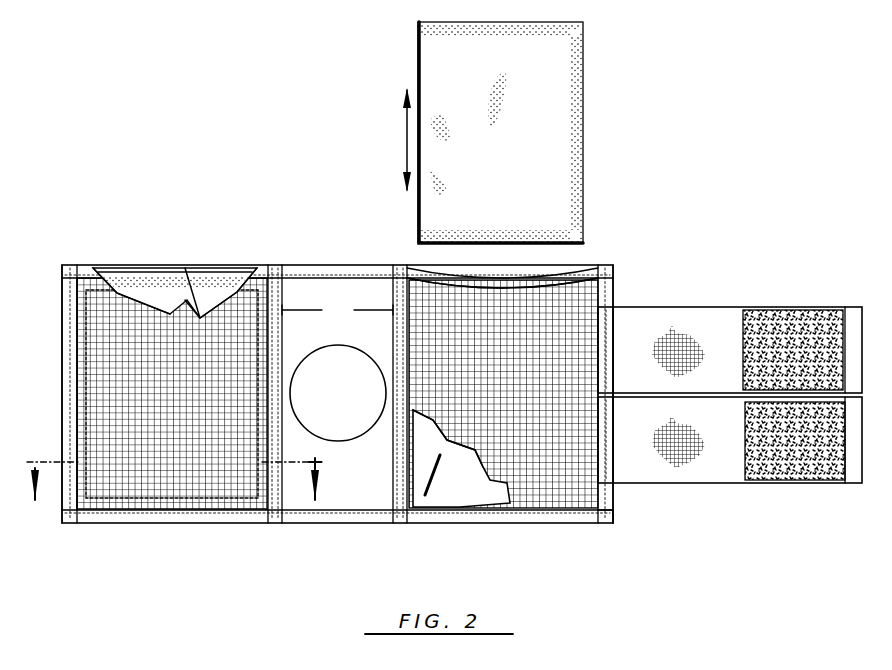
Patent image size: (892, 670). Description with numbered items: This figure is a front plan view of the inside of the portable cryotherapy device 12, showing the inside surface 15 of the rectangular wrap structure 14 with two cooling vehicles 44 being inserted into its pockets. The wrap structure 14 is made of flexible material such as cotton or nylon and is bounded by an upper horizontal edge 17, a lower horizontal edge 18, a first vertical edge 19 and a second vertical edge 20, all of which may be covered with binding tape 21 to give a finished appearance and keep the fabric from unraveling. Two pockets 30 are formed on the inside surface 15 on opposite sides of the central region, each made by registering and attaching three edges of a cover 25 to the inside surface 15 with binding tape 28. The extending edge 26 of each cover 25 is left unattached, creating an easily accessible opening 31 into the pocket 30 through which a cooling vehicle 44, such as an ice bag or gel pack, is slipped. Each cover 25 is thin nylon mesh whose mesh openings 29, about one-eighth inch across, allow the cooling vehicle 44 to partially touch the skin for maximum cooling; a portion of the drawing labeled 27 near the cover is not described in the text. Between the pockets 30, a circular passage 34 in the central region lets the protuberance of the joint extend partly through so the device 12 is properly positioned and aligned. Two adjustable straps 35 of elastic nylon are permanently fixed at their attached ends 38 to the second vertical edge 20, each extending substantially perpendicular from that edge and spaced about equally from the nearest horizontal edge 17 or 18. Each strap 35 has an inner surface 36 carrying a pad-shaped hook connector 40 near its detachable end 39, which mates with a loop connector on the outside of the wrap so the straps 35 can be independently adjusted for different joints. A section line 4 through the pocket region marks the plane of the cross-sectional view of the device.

The section line 4- 4 is at (183, 462).
The portable device 12 is at (171, 228).
The wrap structure 14 is at (337, 250).
The inside surface 15 is at (382, 394).
The upper horizontal edge 17 is at (243, 272).
The lower horizontal edge 18 is at (612, 527).
The first vertical edge 19 is at (62, 355).
The second vertical edge 20 is at (614, 290).
The binding tape 21 is at (68, 402).
The cover 25 is at (175, 505).
The extending edge 26 is at (565, 268).
The filter media fragment 27 is at (223, 278).
The binding tape 28 is at (337, 310).
The mesh openings 29 is at (224, 505).
The pocket 30 is at (184, 278).
The opening 31 is at (455, 270).
The circular passage 34 is at (338, 393).
The adjustable strap 35 is at (742, 304).
The inner surface 36 is at (703, 318).
The attached end 38 is at (598, 357).
The detachable end 39 is at (853, 308).
The hook connector 40 is at (772, 309).
The cooling vehicle 44 is at (590, 146).